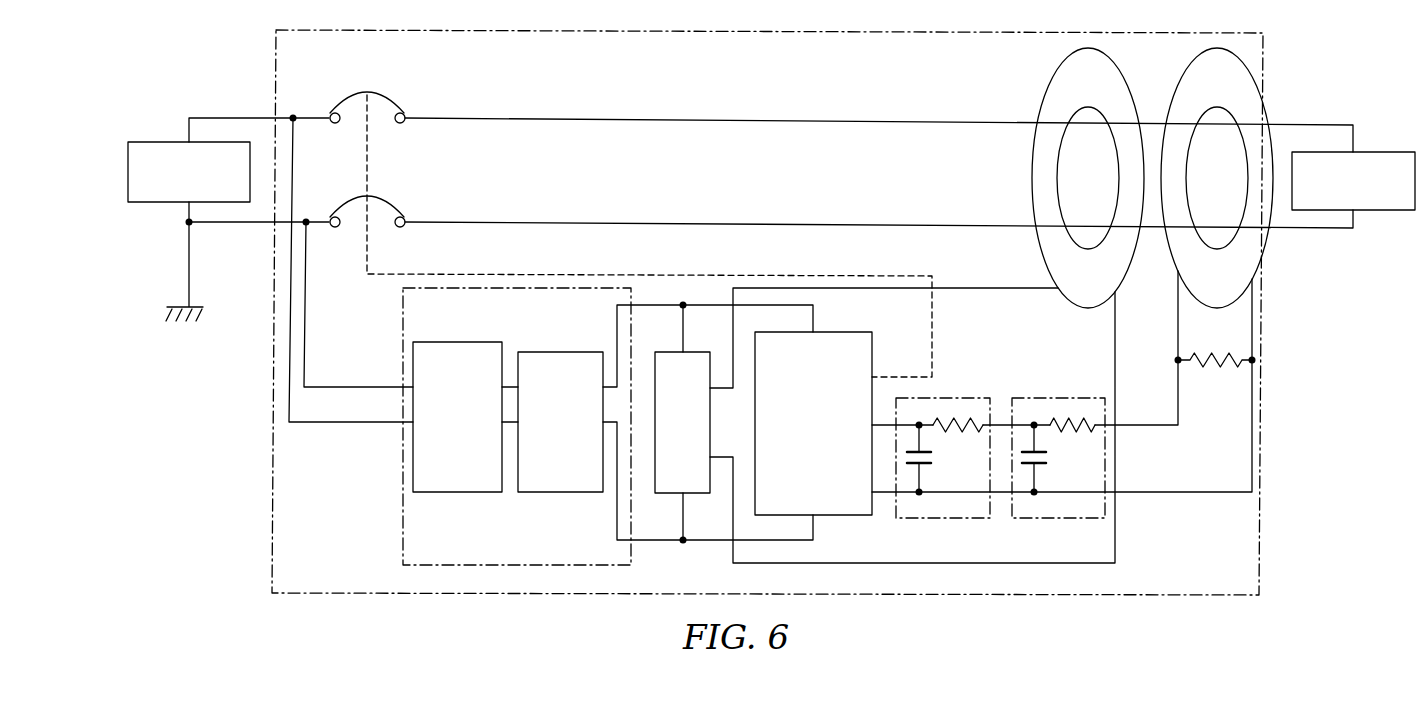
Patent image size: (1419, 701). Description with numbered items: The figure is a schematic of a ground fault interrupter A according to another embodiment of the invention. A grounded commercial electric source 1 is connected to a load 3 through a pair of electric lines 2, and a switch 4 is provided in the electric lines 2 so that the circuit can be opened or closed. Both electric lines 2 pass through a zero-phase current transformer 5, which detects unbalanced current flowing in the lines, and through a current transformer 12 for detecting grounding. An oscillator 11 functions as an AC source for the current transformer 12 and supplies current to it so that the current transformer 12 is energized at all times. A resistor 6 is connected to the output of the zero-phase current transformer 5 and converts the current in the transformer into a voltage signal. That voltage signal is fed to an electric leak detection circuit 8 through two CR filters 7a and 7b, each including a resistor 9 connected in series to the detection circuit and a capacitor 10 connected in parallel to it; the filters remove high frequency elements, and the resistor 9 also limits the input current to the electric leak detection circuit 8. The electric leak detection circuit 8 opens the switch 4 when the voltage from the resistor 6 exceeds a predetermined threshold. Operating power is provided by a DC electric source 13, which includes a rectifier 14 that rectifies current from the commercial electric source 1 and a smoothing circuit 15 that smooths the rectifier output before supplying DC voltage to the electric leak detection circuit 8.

The commercial electric source 1 is at (167, 143).
The electric lines 2 is at (657, 121).
The load 3 is at (1380, 151).
The switch 4 is at (394, 98).
The zero-phase current transformer 5 is at (1196, 68).
The resistor for detection 6 is at (1216, 372).
The CR filter 7a is at (1010, 512).
The CR filter 7b is at (895, 512).
The electric leak detection circuit 8 is at (866, 347).
The resistor 9 is at (957, 422).
The capacitor 10 is at (930, 452).
The oscillator 11 is at (663, 495).
The current transformer 12 is at (1046, 92).
The DC electric source 13 is at (398, 532).
The rectifier 14 is at (441, 493).
The smoothing circuit 15 is at (548, 493).
The ground fault interrupter A is at (1264, 382).